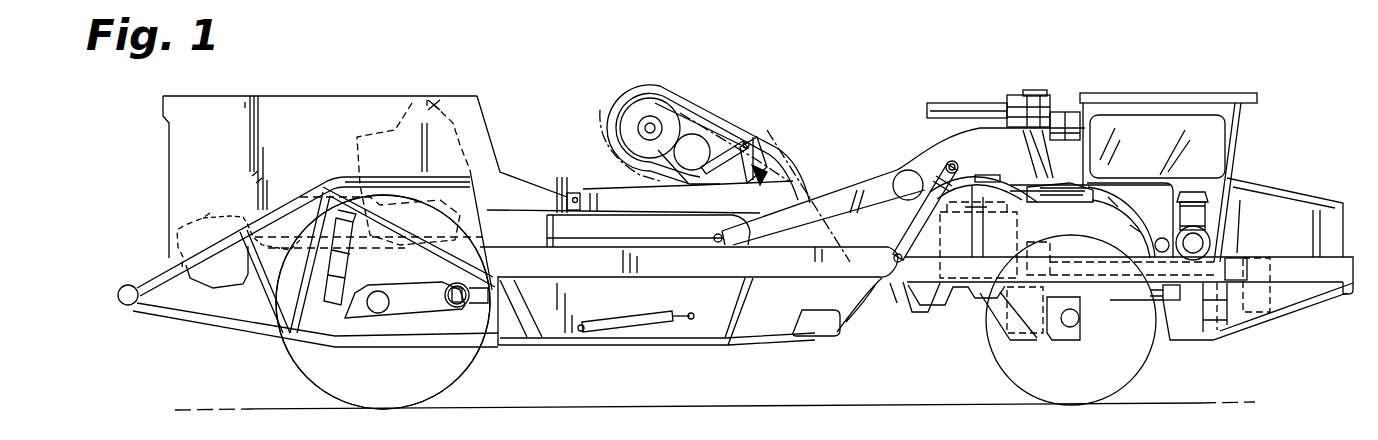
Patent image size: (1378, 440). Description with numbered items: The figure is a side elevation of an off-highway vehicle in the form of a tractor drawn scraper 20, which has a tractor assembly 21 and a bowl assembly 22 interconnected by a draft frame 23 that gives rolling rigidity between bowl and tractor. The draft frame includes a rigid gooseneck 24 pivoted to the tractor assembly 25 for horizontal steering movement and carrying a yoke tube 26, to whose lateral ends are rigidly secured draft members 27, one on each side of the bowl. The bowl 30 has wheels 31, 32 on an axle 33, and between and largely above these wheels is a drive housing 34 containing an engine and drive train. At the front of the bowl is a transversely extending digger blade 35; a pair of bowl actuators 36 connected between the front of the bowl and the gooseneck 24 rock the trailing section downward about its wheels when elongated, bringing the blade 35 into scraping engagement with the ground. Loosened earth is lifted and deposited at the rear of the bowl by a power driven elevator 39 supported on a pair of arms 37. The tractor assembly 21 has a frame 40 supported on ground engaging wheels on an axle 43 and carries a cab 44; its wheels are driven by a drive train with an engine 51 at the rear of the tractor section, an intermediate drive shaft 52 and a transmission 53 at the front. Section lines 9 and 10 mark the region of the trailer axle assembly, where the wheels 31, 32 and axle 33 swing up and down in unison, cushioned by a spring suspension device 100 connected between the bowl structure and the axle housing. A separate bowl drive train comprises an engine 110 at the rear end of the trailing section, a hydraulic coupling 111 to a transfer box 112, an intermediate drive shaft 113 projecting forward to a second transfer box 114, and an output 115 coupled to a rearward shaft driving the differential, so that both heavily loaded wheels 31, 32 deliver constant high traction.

The tractor drawn scraper 20 is at (859, 391).
The drive housing 34 is at (330, 97).
The engine 110 is at (434, 98).
The hydraulic coupling 111 is at (244, 171).
The transfer box 112 is at (210, 213).
The section line 9- 9 is at (336, 160).
The section line 10- 10 is at (292, 292).
The axle 33 is at (383, 310).
The output 115 is at (472, 306).
The spring suspension device 100 is at (353, 266).
The intermediate drive shaft 113 is at (368, 238).
The wheel 31 is at (458, 376).
The wheel 32 is at (383, 302).
The second transfer box 114 is at (497, 240).
The bowl 30 is at (558, 188).
The arms 37 is at (600, 193).
The bowl assembly 22 is at (607, 71).
The power driven elevator 39 is at (691, 112).
The draft frame 23 is at (911, 102).
The tractor assembly 25 is at (1040, 93).
The gooseneck 24 is at (928, 147).
The yoke tube 26 is at (900, 178).
The draft members 27 is at (858, 220).
The bowl actuators 36 is at (907, 283).
The digger blade 35 is at (810, 342).
The engine 51 is at (993, 226).
The intermediate drive shaft 52 is at (1097, 243).
The frame 40 is at (1350, 260).
The axle 43 is at (1068, 328).
The transmission 53 is at (1272, 250).
The tractor assembly 21 is at (1117, 82).
The cab 44 is at (1240, 137).